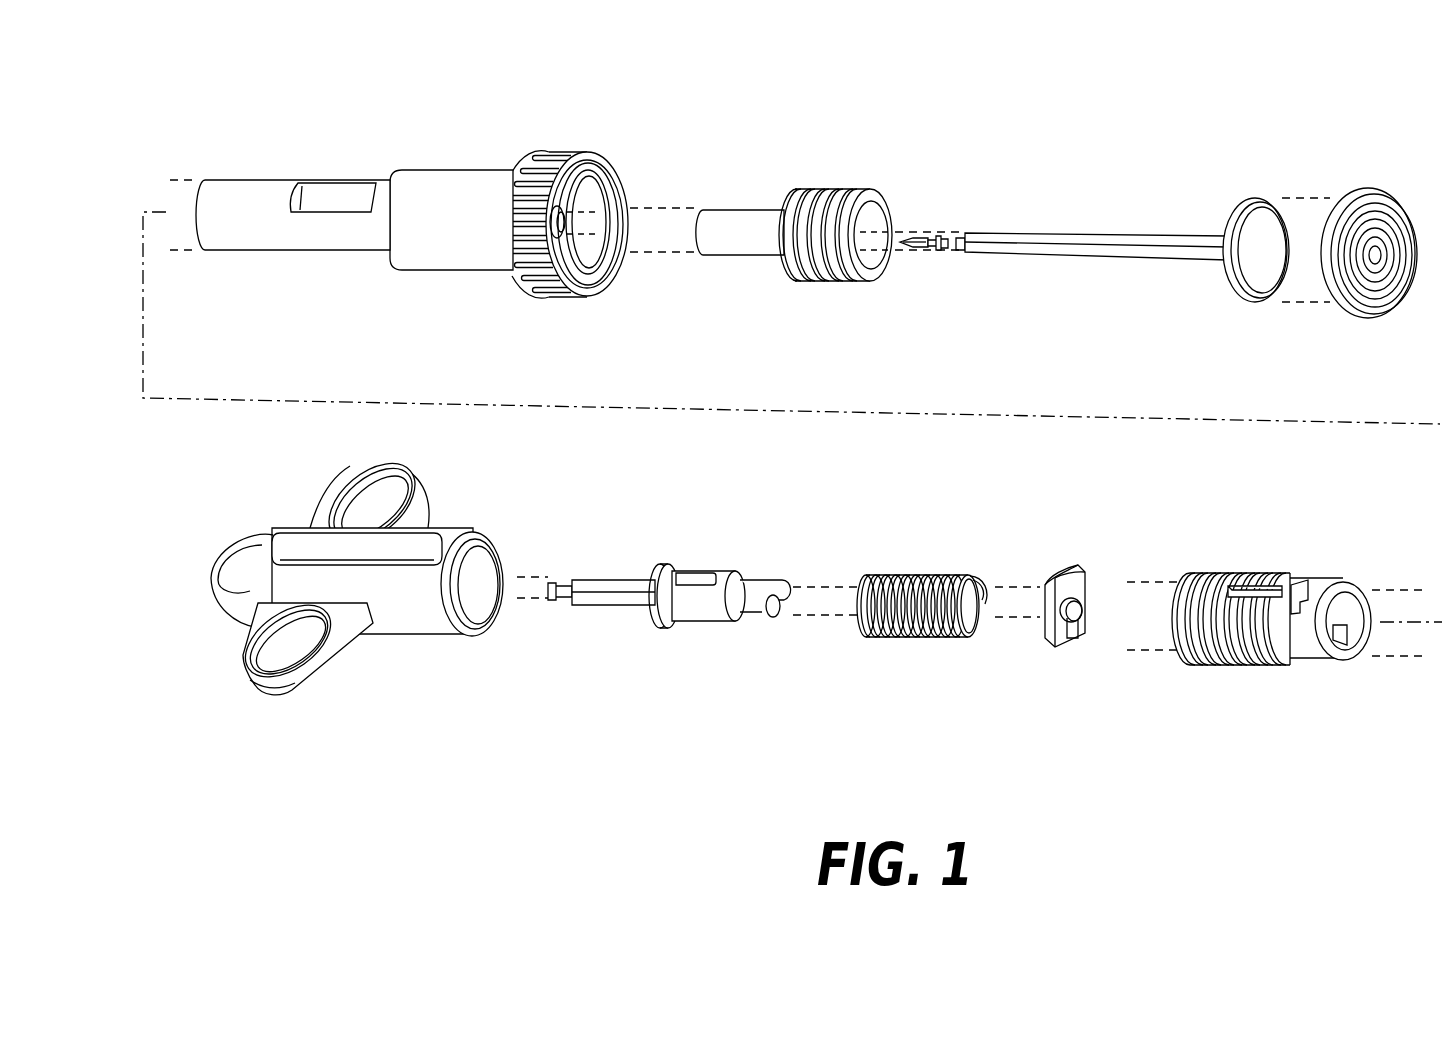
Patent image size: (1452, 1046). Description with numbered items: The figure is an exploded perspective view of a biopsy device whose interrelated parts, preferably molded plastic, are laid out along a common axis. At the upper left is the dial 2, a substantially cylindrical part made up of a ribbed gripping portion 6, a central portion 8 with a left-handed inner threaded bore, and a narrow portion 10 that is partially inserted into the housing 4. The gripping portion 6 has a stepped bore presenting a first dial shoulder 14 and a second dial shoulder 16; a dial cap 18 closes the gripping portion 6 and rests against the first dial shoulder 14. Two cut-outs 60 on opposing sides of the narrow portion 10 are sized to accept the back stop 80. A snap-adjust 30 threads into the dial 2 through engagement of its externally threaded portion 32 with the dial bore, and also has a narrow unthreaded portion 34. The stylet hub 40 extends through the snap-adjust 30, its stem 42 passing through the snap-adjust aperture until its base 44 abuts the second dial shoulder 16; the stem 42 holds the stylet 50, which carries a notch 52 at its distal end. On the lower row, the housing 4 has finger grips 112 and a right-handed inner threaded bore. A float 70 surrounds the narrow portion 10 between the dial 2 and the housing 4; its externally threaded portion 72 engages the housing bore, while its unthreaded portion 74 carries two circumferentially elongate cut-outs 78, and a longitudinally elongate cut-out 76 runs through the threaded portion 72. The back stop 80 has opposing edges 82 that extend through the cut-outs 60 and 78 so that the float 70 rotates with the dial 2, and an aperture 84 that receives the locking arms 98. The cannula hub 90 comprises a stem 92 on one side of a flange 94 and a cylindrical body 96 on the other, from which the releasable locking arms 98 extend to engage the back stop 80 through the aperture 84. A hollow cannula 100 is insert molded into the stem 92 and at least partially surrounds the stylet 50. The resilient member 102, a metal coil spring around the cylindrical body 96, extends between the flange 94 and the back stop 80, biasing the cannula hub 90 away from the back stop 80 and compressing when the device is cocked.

The dial 2 is at (470, 157).
The housing 4 is at (357, 557).
The gripping portion 6 is at (607, 192).
The central portion 8 is at (420, 170).
The narrow portion 10 is at (293, 170).
The first dial shoulder 14 is at (593, 193).
The second dial shoulder 16 is at (580, 227).
The dial cap 18 is at (1380, 189).
The snap-adjust 30 is at (849, 182).
The externally threaded portion 32 is at (853, 193).
The narrow unthreaded portion 34 is at (740, 210).
The stylet hub 40 is at (1126, 200).
The stem 42 is at (1057, 233).
The base 44 is at (1253, 198).
The stylet 50 is at (933, 234).
The notch 52 is at (917, 229).
The cut-outs 60 is at (331, 204).
The float 70 is at (1292, 643).
The externally threaded portion 72 is at (1217, 666).
The unthreaded portion 74 is at (1315, 666).
The longitudinally elongate cut-out 76 is at (1253, 574).
The circumferentially elongate cut-outs 78 is at (1307, 580).
The back stop 80 is at (1086, 637).
The opposing edges 82 is at (1080, 567).
The aperture 84 is at (1073, 616).
The cannula hub 90 is at (668, 614).
The stem 92 is at (607, 580).
The flange 94 is at (663, 566).
The cylindrical body 96 is at (700, 614).
The locking arms 98 is at (777, 580).
The cannula 100 is at (563, 598).
The resilient member 102 is at (918, 662).
The finger grips 112 is at (417, 470).